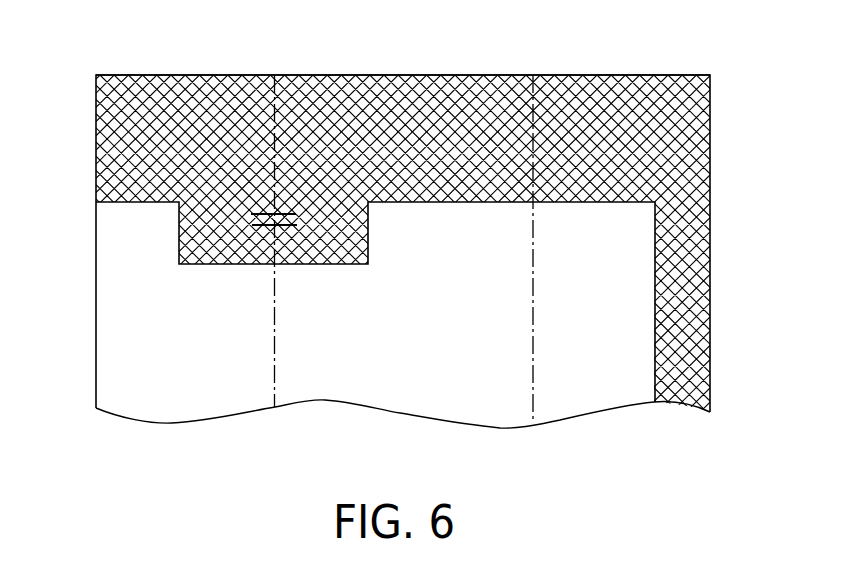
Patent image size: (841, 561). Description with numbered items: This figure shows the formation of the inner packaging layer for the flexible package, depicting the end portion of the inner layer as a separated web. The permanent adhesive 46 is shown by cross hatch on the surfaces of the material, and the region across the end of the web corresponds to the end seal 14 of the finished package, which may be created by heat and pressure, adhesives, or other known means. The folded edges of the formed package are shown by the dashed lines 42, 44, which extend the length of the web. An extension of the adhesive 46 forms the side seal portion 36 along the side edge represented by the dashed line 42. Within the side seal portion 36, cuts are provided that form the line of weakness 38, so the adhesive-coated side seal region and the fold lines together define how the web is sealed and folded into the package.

The end seal 14 is at (165, 97).
The permanent adhesive 46 is at (415, 98).
The side seal portion 36 is at (210, 240).
The line of weakness 38 is at (289, 228).
The dashed line (folded edge) 42 is at (274, 347).
The dashed line (folded edge) 44 is at (533, 362).